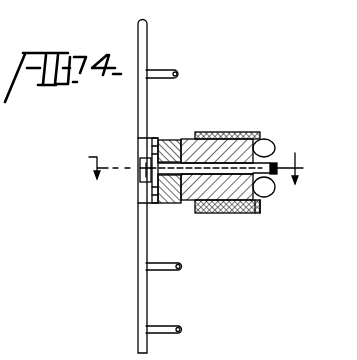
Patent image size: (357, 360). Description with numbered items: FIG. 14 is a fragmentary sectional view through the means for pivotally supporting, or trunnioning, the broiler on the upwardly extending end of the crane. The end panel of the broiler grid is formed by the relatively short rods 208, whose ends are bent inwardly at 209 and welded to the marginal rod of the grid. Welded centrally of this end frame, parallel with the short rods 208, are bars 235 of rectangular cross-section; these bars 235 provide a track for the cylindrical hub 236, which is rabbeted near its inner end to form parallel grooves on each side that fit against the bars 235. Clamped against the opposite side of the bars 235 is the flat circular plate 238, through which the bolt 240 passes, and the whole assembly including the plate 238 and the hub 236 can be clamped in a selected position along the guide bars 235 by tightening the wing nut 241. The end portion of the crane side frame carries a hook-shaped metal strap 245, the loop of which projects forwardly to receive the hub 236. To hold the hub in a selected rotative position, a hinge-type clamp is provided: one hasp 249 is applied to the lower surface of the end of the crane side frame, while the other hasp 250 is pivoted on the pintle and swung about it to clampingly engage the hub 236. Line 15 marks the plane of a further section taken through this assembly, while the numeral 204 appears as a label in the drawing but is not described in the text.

The section line 15- 15 is at (197, 168).
The mounting plate 204 is at (138, 103).
The short rods 208 is at (177, 72).
The inwardly bent ends 209 is at (157, 70).
The bars 235 is at (173, 136).
The cylindrical hub 236 is at (220, 134).
The flat circular plate 238 is at (142, 184).
The bolt 240 is at (240, 215).
The wing nut 241 is at (272, 142).
The hook-shaped metal straps 245 is at (212, 214).
The hasp 249 is at (257, 213).
The hasp 250 is at (259, 132).